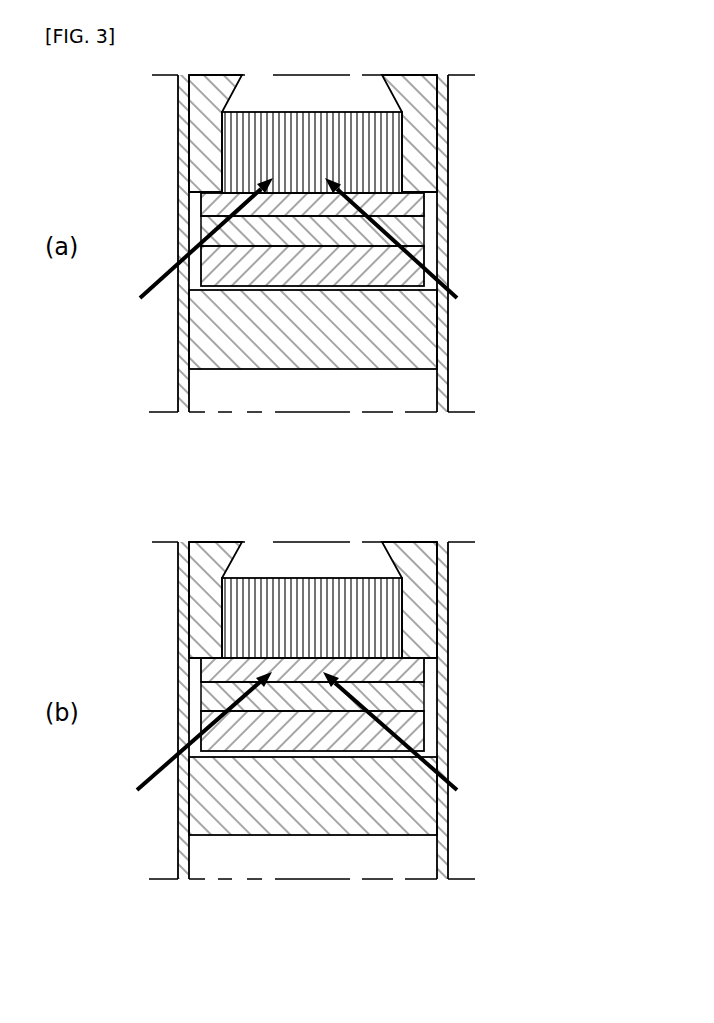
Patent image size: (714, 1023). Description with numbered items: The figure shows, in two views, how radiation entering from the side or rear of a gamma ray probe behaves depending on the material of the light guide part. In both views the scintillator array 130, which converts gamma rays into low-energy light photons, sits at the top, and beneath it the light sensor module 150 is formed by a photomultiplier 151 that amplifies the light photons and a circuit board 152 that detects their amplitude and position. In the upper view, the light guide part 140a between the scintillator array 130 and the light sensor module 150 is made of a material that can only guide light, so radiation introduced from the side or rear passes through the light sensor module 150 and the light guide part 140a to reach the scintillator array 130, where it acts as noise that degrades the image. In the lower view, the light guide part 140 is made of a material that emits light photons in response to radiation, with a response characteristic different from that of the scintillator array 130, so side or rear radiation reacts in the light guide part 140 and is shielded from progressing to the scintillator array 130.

The scintillator array 130 is at (352, 153).
The light guide part 140a is at (420, 205).
The light guide part 140 is at (420, 670).
The light sensor module 150 is at (412, 494).
The photomultiplier 151 is at (420, 233).
The circuit board 152 is at (428, 272).